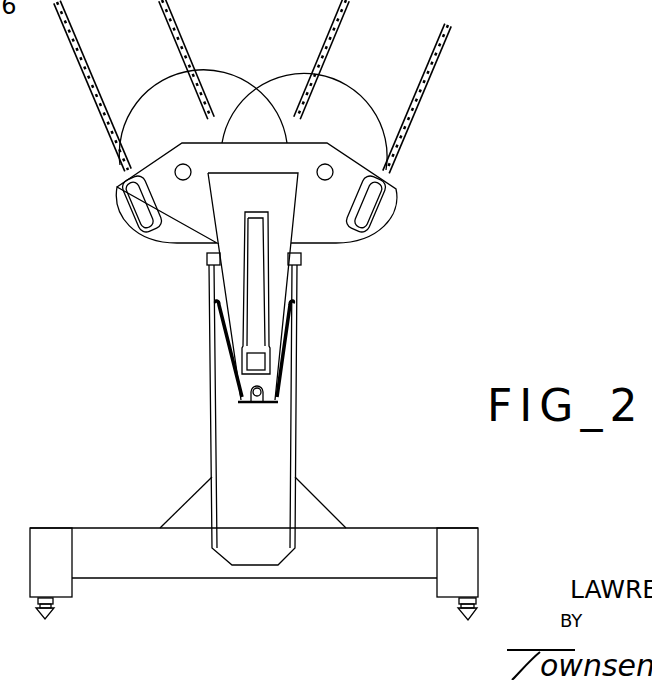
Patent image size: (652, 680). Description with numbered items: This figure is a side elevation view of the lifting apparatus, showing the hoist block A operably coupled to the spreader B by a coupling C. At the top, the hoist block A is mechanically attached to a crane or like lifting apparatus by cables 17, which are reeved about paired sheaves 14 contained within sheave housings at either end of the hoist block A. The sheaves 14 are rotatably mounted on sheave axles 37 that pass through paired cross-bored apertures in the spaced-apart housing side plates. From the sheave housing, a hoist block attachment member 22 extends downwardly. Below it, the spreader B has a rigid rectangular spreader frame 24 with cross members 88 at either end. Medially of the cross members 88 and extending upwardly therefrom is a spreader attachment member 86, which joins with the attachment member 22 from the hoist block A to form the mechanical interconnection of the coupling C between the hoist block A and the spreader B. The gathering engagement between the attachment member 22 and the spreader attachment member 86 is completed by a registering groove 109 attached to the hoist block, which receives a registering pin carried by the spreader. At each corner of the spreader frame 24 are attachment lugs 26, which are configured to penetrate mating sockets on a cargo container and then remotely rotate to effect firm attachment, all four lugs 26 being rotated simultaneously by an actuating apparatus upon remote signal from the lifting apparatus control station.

The cables 17 is at (165, 18).
The sheaves 14 is at (288, 138).
The sheave axles 37 is at (188, 179).
The hoist block A is at (408, 208).
The attachment member 22 is at (292, 274).
The coupling C is at (316, 351).
The spreader attachment member 86 is at (198, 315).
The registering groove 109 is at (231, 403).
The spreader B is at (382, 515).
The cross members 88 is at (173, 568).
The spreader frame 24 is at (97, 518).
The attachment lugs 26 is at (47, 621).